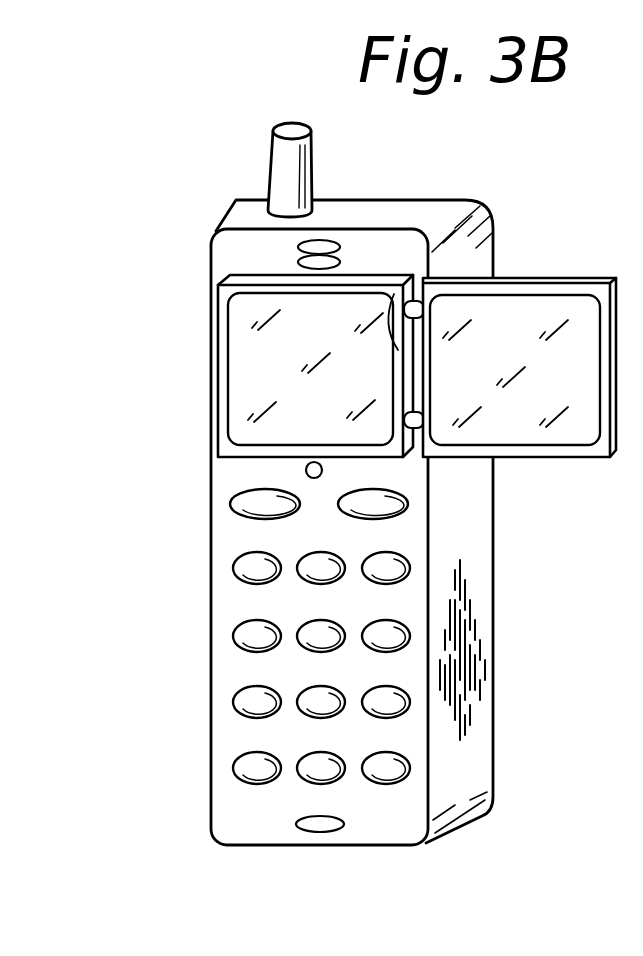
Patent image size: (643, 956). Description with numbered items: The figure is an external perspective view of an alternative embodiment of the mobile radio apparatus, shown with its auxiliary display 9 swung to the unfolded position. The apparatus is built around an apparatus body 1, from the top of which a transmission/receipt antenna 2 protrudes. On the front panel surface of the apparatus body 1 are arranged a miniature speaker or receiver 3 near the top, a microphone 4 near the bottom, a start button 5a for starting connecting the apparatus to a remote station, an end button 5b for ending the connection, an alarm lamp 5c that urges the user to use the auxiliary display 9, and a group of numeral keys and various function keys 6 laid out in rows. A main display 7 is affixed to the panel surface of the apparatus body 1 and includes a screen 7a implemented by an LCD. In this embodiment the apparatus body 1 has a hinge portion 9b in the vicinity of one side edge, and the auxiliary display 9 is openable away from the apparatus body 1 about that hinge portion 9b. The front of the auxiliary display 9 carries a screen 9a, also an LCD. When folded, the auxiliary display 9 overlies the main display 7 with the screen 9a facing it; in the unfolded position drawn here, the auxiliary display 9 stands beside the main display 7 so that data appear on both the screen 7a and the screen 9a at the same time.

The apparatus body 1 is at (468, 715).
The transmission/receipt antenna 2 is at (283, 162).
The miniature speaker or receiver 3 is at (322, 245).
The microphone 4 is at (324, 828).
The start button 5a is at (250, 503).
The end button 5b is at (402, 506).
The alarm lamp 5c is at (306, 470).
The numeral keys and function keys 6 is at (193, 770).
The main display 7 is at (218, 385).
The screen 7a is at (263, 366).
The auxiliary display 9 is at (553, 278).
The screen 9a is at (536, 459).
The hinge portion 9b is at (394, 292).